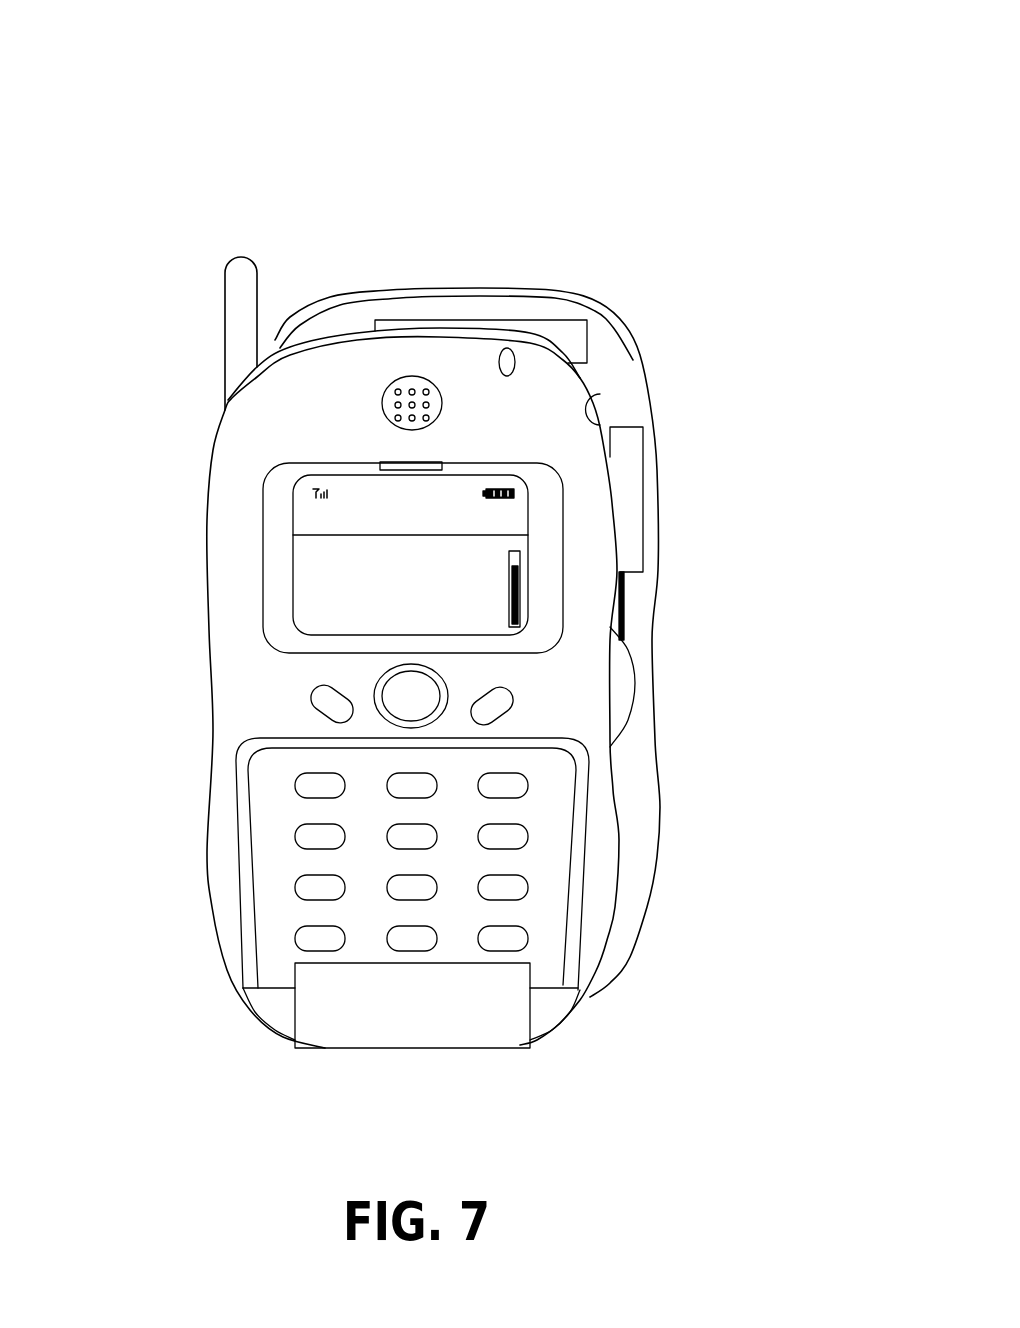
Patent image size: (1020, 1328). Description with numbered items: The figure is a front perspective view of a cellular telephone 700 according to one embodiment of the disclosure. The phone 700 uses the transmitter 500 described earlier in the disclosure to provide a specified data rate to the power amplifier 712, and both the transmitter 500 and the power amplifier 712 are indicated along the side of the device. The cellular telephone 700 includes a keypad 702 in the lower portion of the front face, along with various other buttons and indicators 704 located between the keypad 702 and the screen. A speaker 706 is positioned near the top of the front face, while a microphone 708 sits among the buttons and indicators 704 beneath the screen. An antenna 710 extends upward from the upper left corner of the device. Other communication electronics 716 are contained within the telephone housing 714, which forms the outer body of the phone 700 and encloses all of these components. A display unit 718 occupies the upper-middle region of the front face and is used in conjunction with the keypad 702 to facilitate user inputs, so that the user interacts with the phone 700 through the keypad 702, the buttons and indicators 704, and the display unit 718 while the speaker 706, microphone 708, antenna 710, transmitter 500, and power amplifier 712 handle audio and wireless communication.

The cellular telephone 700 is at (757, 60).
The keypad 702 is at (563, 860).
The buttons and indicators 704 is at (494, 698).
The speaker 706 is at (385, 405).
The microphone 708 is at (411, 696).
The antenna 710 is at (248, 256).
The power amplifier 712 is at (643, 457).
The telephone housing 714 is at (230, 668).
The communication electronics 716 is at (552, 322).
The display unit 718 is at (293, 510).
The transmitter 500 is at (633, 673).